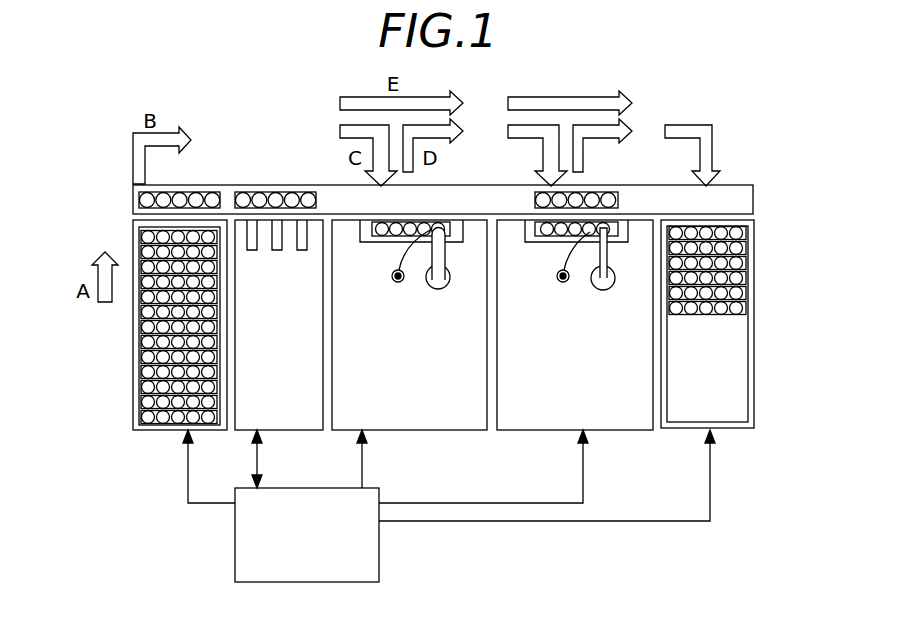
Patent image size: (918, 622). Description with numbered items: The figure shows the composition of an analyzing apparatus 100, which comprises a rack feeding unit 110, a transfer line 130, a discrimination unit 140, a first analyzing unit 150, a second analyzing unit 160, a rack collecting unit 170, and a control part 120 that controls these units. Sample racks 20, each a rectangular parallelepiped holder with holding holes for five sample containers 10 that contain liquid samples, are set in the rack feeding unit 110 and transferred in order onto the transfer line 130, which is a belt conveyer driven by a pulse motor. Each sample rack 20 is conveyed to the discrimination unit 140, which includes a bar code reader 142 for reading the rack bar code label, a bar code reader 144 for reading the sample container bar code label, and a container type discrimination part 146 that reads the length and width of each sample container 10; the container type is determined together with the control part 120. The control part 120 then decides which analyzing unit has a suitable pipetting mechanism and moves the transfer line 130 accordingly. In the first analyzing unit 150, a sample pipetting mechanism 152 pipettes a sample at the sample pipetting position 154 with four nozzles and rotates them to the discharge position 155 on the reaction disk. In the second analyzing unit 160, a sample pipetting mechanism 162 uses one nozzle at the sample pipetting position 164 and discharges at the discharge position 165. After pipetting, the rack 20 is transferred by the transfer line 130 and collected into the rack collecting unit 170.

The sample container 10 is at (141, 313).
The sample rack 20 is at (139, 327).
The analyzing apparatus 100 is at (766, 289).
The rack feeding unit 110 is at (144, 362).
The control part 120 is at (379, 560).
The transfer line 130 is at (133, 203).
The discrimination unit 140 is at (255, 280).
The bar code reader 142 is at (252, 228).
The bar code reader 144 is at (277, 228).
The container type discrimination part 146 is at (302, 228).
The first analyzing unit 150 is at (411, 313).
The sample pipetting mechanism 152 is at (438, 289).
The sample pipetting position 154 is at (438, 227).
The discharge position 155 is at (394, 281).
The second analyzing unit 160 is at (578, 313).
The sample pipetting mechanism 162 is at (603, 290).
The sample pipetting position 164 is at (603, 226).
The discharge position 165 is at (559, 281).
The rack collecting unit 170 is at (731, 428).